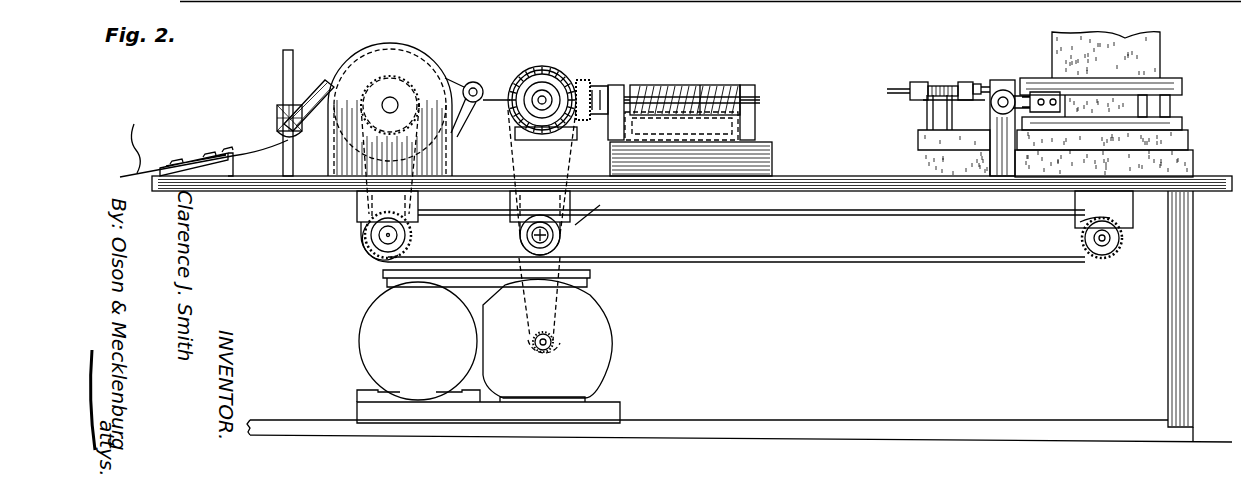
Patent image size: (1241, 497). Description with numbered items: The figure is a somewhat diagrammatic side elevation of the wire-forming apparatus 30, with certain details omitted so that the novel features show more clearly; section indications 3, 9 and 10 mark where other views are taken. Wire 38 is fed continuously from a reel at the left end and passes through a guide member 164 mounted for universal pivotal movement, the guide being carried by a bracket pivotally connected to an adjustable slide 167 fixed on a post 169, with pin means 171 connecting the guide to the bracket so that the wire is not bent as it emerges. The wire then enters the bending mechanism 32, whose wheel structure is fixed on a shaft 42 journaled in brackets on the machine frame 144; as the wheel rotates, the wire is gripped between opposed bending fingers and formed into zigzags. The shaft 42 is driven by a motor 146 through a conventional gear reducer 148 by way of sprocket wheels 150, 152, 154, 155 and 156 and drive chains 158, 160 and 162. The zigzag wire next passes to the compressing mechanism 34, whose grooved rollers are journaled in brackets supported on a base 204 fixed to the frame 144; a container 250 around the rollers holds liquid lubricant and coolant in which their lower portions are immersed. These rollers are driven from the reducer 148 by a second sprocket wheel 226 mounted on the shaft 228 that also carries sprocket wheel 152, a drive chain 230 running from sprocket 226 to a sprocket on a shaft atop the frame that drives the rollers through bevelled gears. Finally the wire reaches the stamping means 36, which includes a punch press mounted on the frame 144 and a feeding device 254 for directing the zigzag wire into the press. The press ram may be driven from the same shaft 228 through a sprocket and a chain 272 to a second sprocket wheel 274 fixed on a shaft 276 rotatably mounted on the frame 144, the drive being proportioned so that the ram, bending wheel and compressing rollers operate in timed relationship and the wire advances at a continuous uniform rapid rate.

The section line 3- 3 is at (381, 15).
The section line 9- 9 is at (678, 91).
The section line 10-10 / gear 10 is at (610, 57).
The apparatus 30 is at (863, 173).
The bending mechanism 32 is at (437, 60).
The compressing mechanism 34 is at (682, 83).
The stamping means 36 is at (1173, 74).
The wire 38 is at (139, 137).
The shaft 42 is at (386, 101).
The machine frame 144 is at (734, 193).
The motor 146 is at (340, 343).
The gear reducer 148 is at (612, 344).
The sprocket wheel 150 is at (545, 318).
The sprocket wheel 152 is at (553, 250).
The sprocket wheel 154 is at (342, 283).
The sprocket wheel 155 is at (357, 213).
The sprocket wheel 156 is at (411, 98).
The drive chain 158 is at (575, 268).
The drive chain 160 is at (414, 305).
The drive chain 162 is at (440, 161).
The guide member 164 is at (306, 106).
The adjustable slide 167 is at (278, 114).
The post 169 is at (288, 50).
The pin means 171 is at (283, 137).
The base 204 is at (773, 160).
The second sprocket wheel 226 is at (576, 212).
The shaft 228 is at (476, 239).
The drive chain 230 is at (513, 134).
The container 250 is at (727, 127).
The feeding device 254 is at (1008, 80).
The chain 272 is at (861, 283).
The second sprocket wheel 274 is at (1105, 260).
The shaft 276 is at (1105, 240).